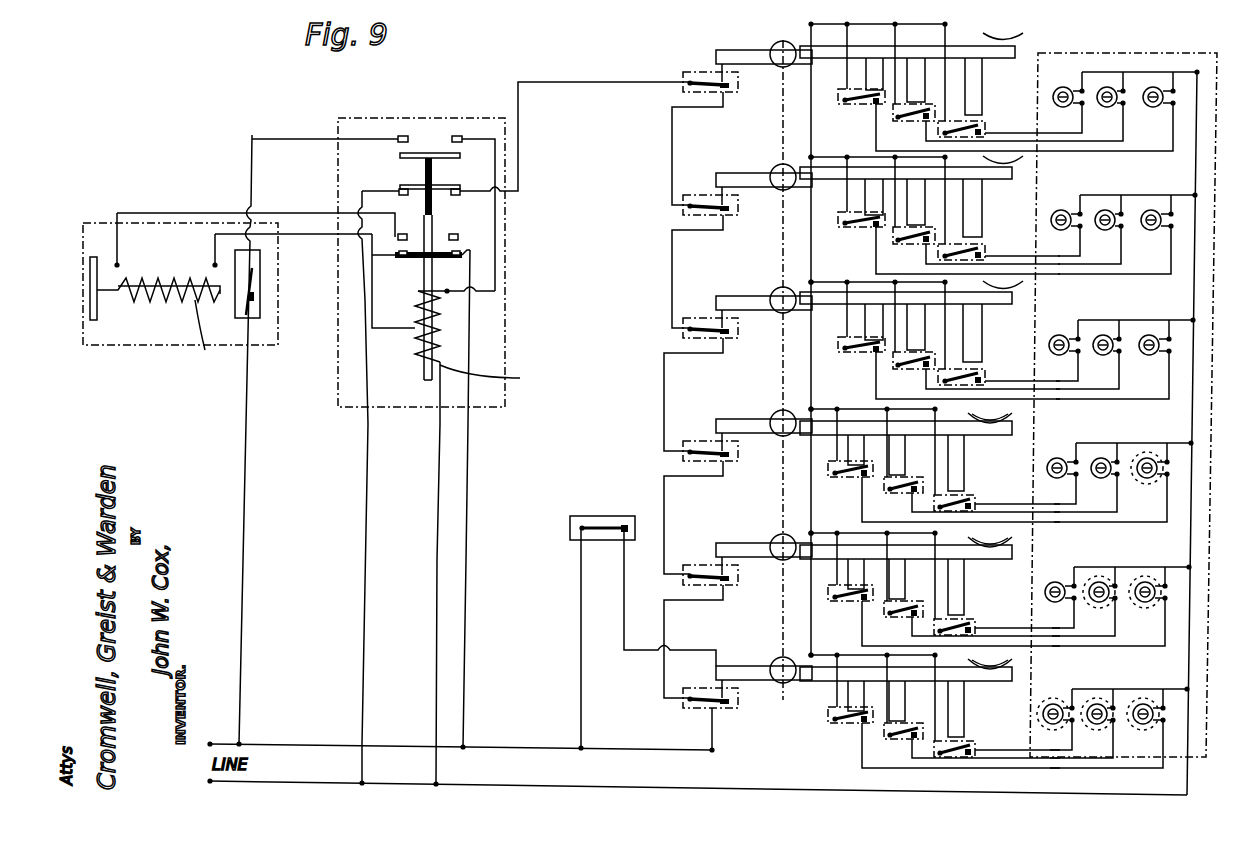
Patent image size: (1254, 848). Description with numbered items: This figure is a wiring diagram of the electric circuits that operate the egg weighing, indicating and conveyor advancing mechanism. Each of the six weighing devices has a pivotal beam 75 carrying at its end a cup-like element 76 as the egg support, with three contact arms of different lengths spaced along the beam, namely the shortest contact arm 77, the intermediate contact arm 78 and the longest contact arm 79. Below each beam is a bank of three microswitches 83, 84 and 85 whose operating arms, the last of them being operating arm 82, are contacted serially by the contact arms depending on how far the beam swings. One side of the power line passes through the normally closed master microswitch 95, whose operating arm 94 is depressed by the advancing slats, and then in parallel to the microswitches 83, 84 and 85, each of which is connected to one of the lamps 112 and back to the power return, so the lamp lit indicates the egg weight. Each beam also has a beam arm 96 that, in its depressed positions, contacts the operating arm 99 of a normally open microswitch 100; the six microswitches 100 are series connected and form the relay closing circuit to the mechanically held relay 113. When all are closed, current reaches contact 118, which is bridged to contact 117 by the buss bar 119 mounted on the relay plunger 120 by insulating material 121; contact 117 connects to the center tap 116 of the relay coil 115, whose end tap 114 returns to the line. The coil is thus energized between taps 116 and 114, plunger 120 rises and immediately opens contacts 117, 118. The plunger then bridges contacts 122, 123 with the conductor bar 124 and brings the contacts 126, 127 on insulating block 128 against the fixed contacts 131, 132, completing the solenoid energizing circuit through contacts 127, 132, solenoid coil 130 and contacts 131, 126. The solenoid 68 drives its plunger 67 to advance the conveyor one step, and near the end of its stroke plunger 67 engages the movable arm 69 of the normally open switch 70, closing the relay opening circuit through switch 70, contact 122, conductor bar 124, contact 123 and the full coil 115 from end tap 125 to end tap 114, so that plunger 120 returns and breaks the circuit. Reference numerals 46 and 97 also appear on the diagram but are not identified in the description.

The lamp bank casing 46 is at (1212, 378).
The solenoid plunger 67 is at (95, 321).
The solenoid 68 is at (160, 345).
The operating arm 69 is at (255, 282).
The switch 70 is at (258, 298).
The pivotal beam 75 is at (886, 46).
The cup-like element 76 is at (1020, 36).
The contact arm 77 is at (866, 78).
The contact arm 78 is at (925, 82).
The contact arm 79 is at (982, 64).
The operating arm 82 is at (978, 126).
The microswitch 83 is at (846, 104).
The microswitch 84 is at (905, 121).
The microswitch 85 is at (982, 127).
The operating arm 94 is at (606, 535).
The master microswitch 95 is at (600, 515).
The beam arm 96 is at (752, 64).
The relay coil 97 is at (786, 68).
The operating arm 99 is at (715, 92).
The microswitch 100 is at (690, 108).
The lamp 112 is at (1148, 105).
The electrical relay 113 is at (507, 328).
The end tap 114 is at (488, 376).
The relay coil 115 is at (432, 360).
The center tap 116 is at (416, 330).
The contact 117 is at (400, 190).
The contact 118 is at (462, 187).
The buss bar 119 is at (455, 195).
The relay plunger 120 is at (418, 292).
The insulating material 121 is at (460, 157).
The contact 122 is at (402, 135).
The contact 123 is at (458, 135).
The conductor bar 124 is at (429, 152).
The end tap 125 is at (454, 265).
The contact 126 is at (399, 265).
The contact 127 is at (464, 258).
The insulating block 128 is at (464, 254).
The solenoid coil 130 is at (207, 335).
The fixed contact 131 is at (400, 233).
The fixed contact 132 is at (458, 236).